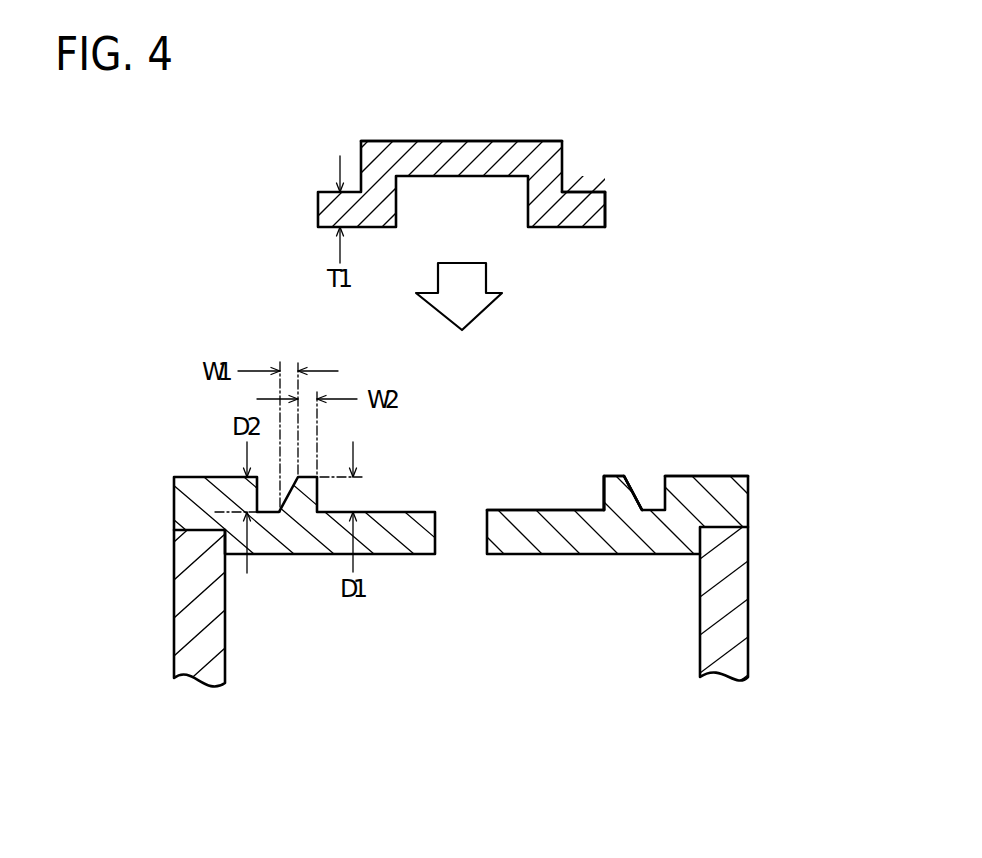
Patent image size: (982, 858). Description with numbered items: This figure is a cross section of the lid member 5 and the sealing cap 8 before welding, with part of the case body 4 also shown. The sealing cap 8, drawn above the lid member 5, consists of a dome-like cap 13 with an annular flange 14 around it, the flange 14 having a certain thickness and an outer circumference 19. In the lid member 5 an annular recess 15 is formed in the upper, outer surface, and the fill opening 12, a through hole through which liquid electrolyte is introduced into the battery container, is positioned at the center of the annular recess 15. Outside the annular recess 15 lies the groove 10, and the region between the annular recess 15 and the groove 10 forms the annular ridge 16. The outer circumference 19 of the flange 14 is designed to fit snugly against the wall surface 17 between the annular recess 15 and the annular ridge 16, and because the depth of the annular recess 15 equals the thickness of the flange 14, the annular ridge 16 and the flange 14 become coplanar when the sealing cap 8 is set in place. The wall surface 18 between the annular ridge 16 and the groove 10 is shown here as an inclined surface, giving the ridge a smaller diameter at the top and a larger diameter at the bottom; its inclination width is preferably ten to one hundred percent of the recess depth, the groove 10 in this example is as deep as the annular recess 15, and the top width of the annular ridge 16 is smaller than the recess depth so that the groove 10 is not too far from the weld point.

The case body 4 is at (185, 630).
The lid member 5 is at (733, 502).
The sealing cap 8 is at (628, 120).
The groove 10 is at (652, 488).
The through hole (fill opening) 12 is at (462, 532).
The dome-like cap 13 is at (460, 148).
The annular flange 14 is at (583, 198).
The annular recess 15 is at (532, 508).
The annular ridge 16 is at (617, 485).
The wall surface 17 is at (603, 497).
The wall surface 18 is at (641, 488).
The outer circumference 19 is at (607, 208).